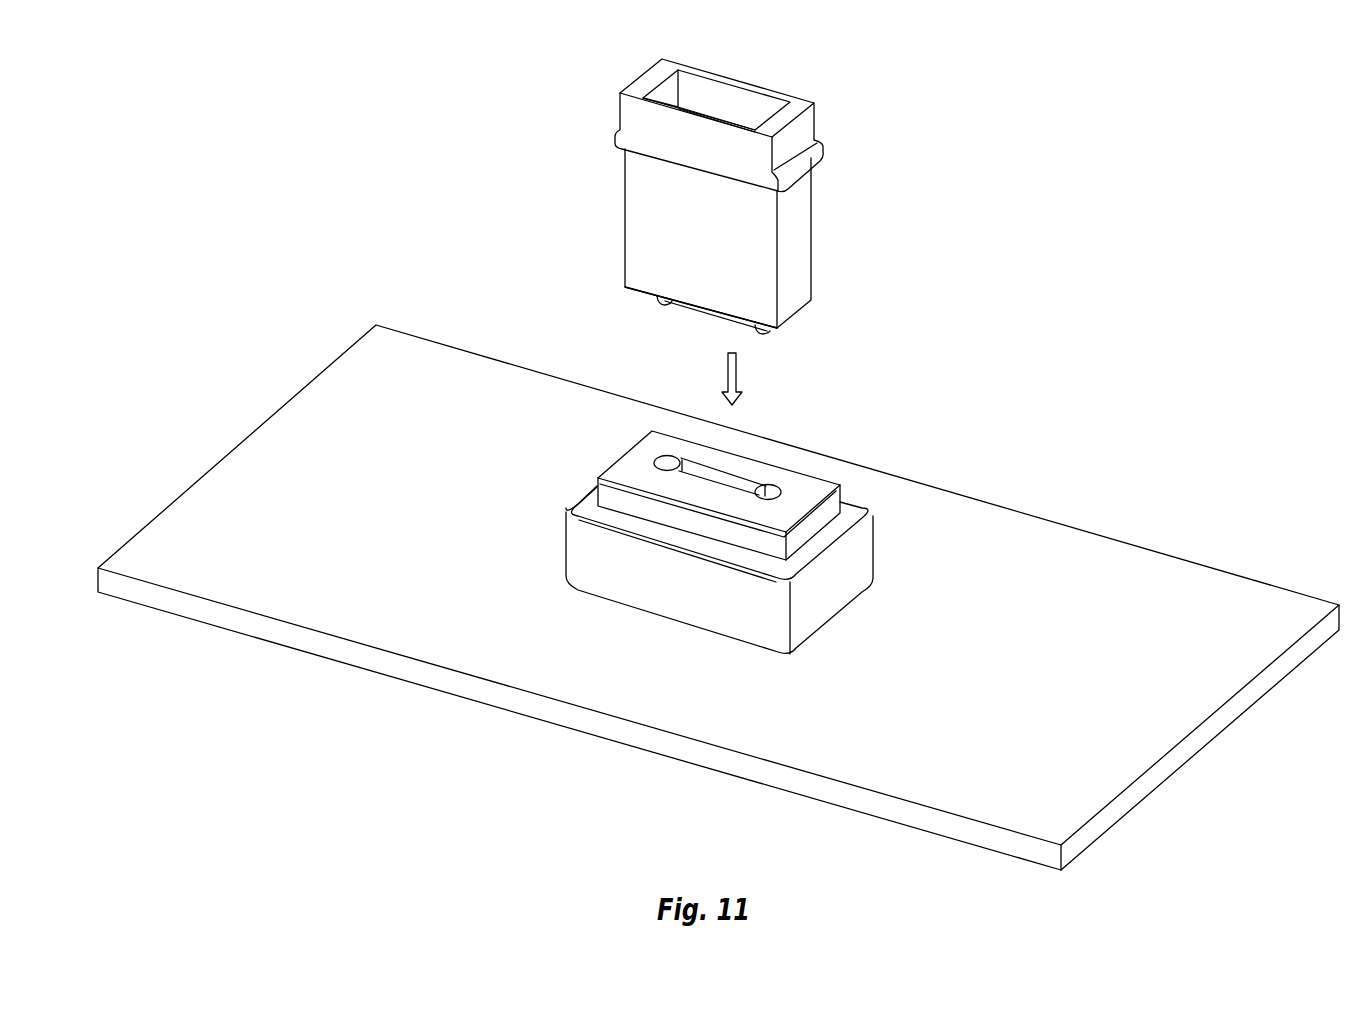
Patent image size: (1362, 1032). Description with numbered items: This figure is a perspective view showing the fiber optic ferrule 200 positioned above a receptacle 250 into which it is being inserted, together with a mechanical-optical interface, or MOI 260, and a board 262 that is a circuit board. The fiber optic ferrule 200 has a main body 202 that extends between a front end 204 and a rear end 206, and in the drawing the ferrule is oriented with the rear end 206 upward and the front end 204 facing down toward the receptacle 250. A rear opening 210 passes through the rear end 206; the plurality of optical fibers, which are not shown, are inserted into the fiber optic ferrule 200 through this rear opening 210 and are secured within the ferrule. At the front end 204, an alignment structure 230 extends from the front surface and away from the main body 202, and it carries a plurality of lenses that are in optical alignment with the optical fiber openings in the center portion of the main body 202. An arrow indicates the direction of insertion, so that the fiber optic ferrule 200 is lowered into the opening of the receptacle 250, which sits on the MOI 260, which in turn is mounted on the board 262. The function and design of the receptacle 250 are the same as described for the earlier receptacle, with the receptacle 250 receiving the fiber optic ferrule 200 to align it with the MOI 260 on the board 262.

The fiber optic ferrule 200 is at (862, 172).
The main body 202 is at (804, 252).
The front end 204 is at (632, 289).
The rear end 206 is at (803, 100).
The rear opening 210 is at (745, 90).
The alignment structure 230 is at (662, 305).
The receptacle 250 is at (802, 483).
The MOI 260 is at (871, 503).
The board 262 is at (1053, 543).